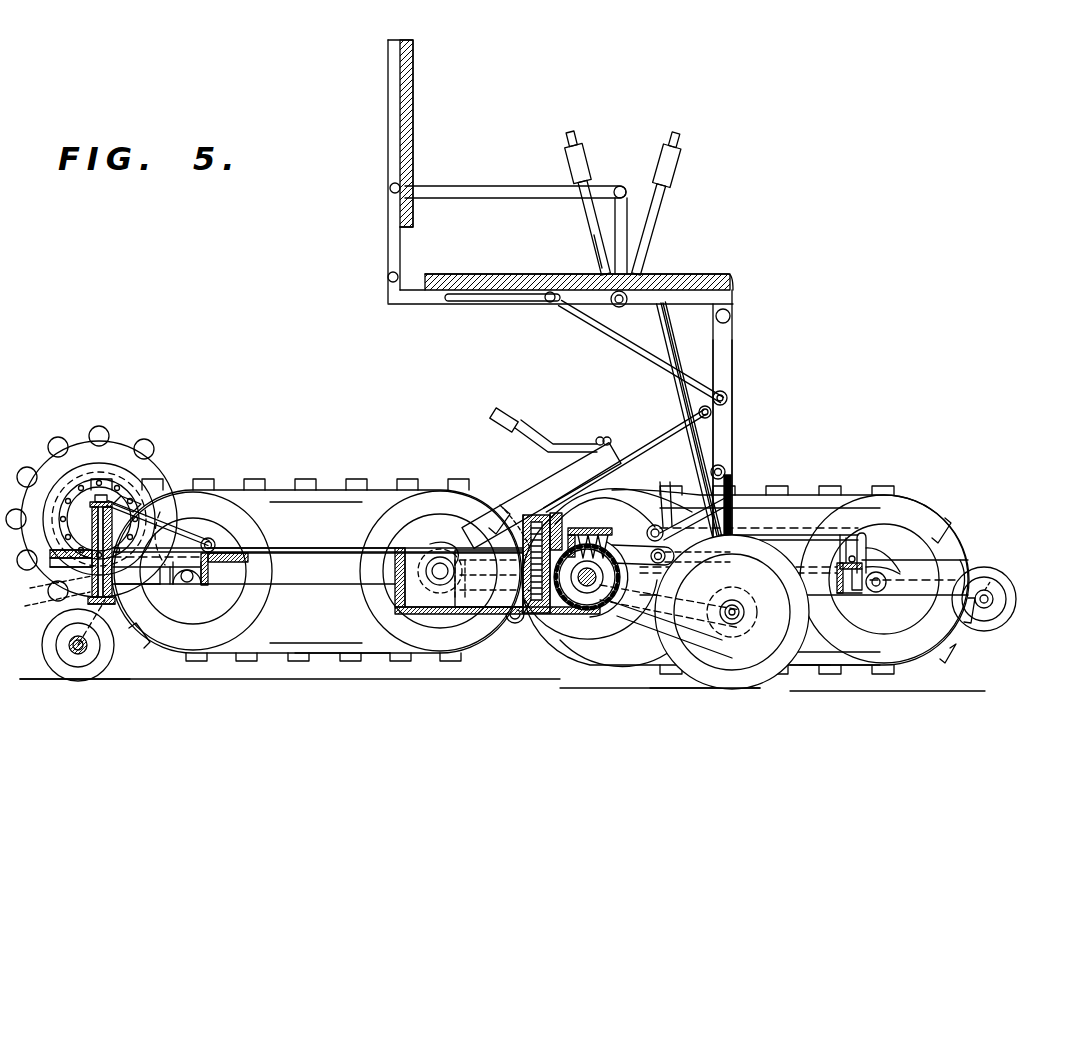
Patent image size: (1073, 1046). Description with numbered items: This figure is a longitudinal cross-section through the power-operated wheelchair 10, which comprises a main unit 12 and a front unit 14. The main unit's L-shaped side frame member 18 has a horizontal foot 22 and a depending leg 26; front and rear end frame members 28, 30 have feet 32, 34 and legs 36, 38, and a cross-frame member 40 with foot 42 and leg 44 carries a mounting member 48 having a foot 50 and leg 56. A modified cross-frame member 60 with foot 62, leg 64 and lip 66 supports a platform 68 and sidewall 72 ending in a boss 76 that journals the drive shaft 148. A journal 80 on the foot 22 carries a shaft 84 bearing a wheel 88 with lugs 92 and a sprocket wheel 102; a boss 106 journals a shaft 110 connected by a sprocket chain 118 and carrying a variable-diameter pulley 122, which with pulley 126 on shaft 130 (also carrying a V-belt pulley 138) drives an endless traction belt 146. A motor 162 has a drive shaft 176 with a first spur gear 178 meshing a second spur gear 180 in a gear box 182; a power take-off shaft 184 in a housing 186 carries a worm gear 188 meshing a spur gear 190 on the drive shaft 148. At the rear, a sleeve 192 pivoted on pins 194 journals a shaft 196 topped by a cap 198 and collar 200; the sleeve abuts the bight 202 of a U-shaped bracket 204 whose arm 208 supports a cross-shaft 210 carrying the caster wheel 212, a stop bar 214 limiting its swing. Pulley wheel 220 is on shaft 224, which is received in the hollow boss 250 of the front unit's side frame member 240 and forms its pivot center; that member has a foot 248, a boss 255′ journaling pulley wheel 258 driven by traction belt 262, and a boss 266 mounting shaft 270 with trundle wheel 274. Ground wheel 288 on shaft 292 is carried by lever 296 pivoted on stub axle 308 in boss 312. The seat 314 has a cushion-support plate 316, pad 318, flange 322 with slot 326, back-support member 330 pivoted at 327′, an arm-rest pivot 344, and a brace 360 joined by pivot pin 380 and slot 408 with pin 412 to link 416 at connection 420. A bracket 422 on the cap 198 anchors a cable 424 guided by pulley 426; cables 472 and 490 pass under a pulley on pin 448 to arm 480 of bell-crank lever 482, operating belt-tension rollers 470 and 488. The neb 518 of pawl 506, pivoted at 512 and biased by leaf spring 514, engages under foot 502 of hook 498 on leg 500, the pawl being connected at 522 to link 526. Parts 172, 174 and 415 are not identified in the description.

The wheelchair 10 is at (783, 458).
The main unit 12 is at (340, 446).
The front unit 14 is at (829, 466).
The side frame member 18 is at (283, 586).
The horizontal foot 22 is at (283, 561).
The depending side leg 26 is at (315, 584).
The front end frame member 28 is at (835, 580).
The rear end frame member 30 is at (45, 566).
The horizontal foot 32 is at (868, 560).
The horizontal foot 34 is at (62, 550).
The depending leg 36 is at (840, 595).
The depending leg 38 is at (30, 588).
The cross-frame member 40 is at (212, 568).
The horizontal foot 42 is at (222, 557).
The upright depending leg 44 is at (206, 586).
The mounting member 48 is at (147, 576).
The horizontal foot 50 is at (168, 545).
The depending upright leg 56 is at (172, 574).
The modified cross-frame member 60 is at (392, 571).
The horizontal foot 62 is at (392, 546).
The depending upright leg 64 is at (397, 580).
The depending extension or lip 66 is at (400, 600).
The platform 68 is at (468, 595).
The sidewall 72 is at (408, 610).
The centrally-apertured boss 76 is at (625, 610).
The journal 80 is at (78, 470).
The shaft 84 is at (70, 525).
The wheel 88 is at (55, 462).
The lugs 92 is at (26, 482).
The sprocket wheel 102 is at (105, 480).
The boss 106 is at (192, 586).
The shaft 110 is at (183, 586).
The endless sprocket chain 118 is at (112, 490).
The variable diameter V-belt pulley 122 is at (283, 612).
The variable diameter pulley 126 is at (400, 640).
The shaft 130 is at (438, 558).
The V-belt pulley 138 is at (450, 546).
The endless traction belt 146 is at (338, 497).
The drive shaft 148 is at (582, 612).
The motor 162 is at (455, 590).
The first hydraulic cylinder 172 is at (573, 131).
The second hydraulic cylinder 174 is at (677, 135).
The drive shaft 176 is at (518, 581).
The first spur gear 178 is at (505, 628).
The second spur gear 180 is at (588, 222).
The gear box 182 is at (657, 216).
The power take-off shaft 184 is at (570, 535).
The housing 186 is at (605, 535).
The worm gear 188 is at (604, 532).
The spur gear 190 is at (560, 618).
The sleeve 192 is at (90, 612).
The pins 194 is at (90, 603).
The shaft 196 is at (112, 540).
The cap 198 is at (125, 502).
The collar 200 is at (120, 498).
The bight 202 is at (68, 625).
The inverted U-shaped bracket 204 is at (62, 642).
The depending arm 208 is at (150, 586).
The cross-shaft 210 is at (83, 654).
The caster wheel 212 is at (78, 672).
The L-shaped stop bar 214 is at (40, 603).
The adjustable-diameter V-belt pulley wheel 220 is at (605, 655).
The shaft 224 is at (648, 650).
The side frame member 240 is at (920, 560).
The foot 248 is at (960, 572).
The hollow boss 250 is at (680, 640).
The boss 255′ is at (882, 591).
The adjustable-diameter pulley wheel 258 is at (945, 645).
The endless traction V-belt 262 is at (845, 676).
The boss 266 is at (998, 570).
The shaft 270 is at (995, 599).
The trundle wheel 274 is at (1008, 585).
The ground-engaging wheel 288 is at (745, 692).
The shaft 292 is at (735, 625).
The lever 296 is at (662, 527).
The stub axle 308 is at (705, 580).
The boss 312 is at (705, 545).
The seat 314 is at (378, 224).
The cushion-support plate 316 is at (735, 300).
The cushion or pad 318 is at (718, 281).
The side flange 322 is at (399, 305).
The slot 326 is at (482, 302).
The pivotal connection 327′ is at (389, 283).
The seat back-support member 330 is at (389, 260).
The pivotal connection 344 is at (620, 186).
The brace 360 is at (733, 366).
The pivot pin 380 is at (728, 403).
The slot 408 is at (736, 490).
The pin 412 is at (724, 468).
The pin 415 is at (218, 538).
The link 416 is at (712, 445).
The pivotal connection 420 is at (640, 545).
The bracket 422 is at (140, 500).
The cable 424 is at (208, 538).
The guide pulley 426 is at (245, 540).
The pulley 448 is at (804, 508).
The belt-tension roller 470 is at (658, 549).
The cable 472 is at (684, 404).
The arm 480 is at (641, 350).
The bell-crank lever 482 is at (592, 257).
The belt-tensioning roller 488 is at (518, 626).
The cable 490 is at (682, 370).
The hook 498 is at (845, 596).
The upright leg 500 is at (845, 605).
The forwardly-facing foot 502 is at (840, 535).
The pawl 506 is at (870, 560).
The pivotal mount 512 is at (861, 533).
The leaf spring 514 is at (866, 563).
The neb end 518 is at (860, 592).
The pivotal connection 522 is at (868, 546).
The rigid link 526 is at (845, 540).